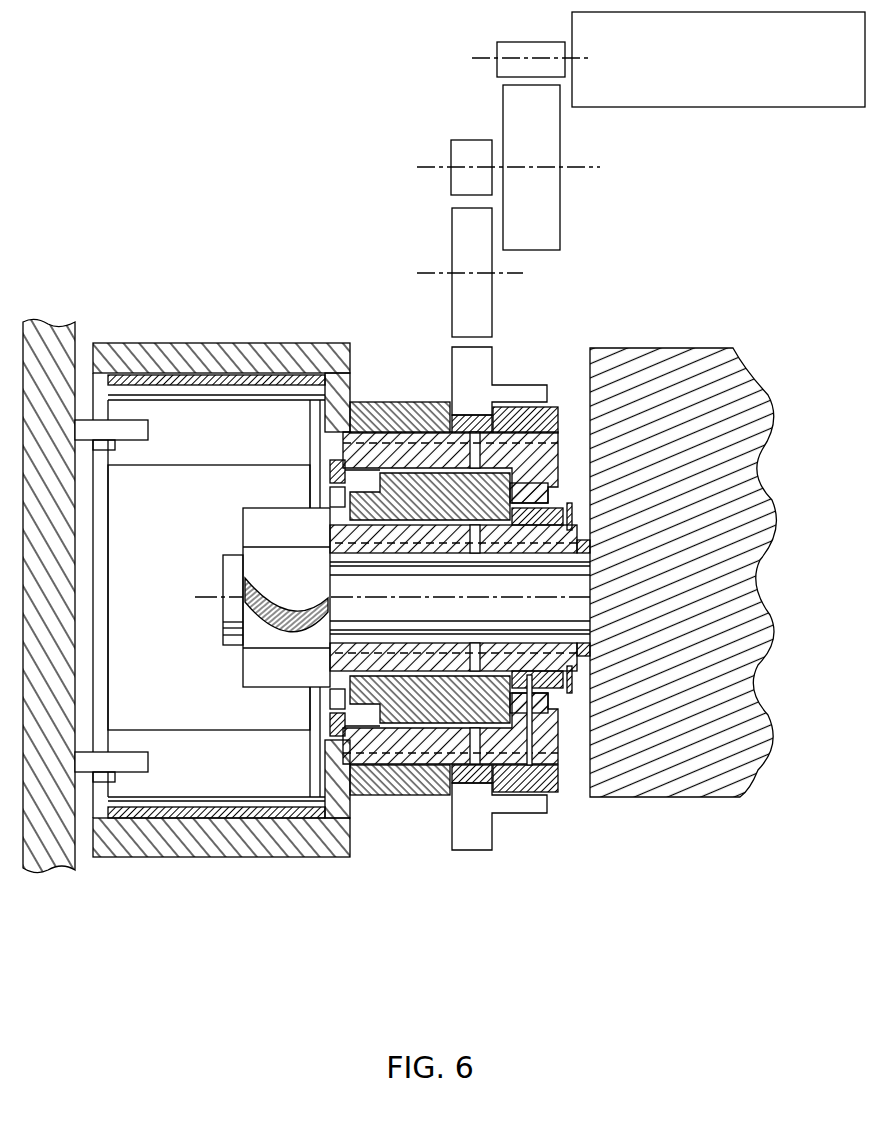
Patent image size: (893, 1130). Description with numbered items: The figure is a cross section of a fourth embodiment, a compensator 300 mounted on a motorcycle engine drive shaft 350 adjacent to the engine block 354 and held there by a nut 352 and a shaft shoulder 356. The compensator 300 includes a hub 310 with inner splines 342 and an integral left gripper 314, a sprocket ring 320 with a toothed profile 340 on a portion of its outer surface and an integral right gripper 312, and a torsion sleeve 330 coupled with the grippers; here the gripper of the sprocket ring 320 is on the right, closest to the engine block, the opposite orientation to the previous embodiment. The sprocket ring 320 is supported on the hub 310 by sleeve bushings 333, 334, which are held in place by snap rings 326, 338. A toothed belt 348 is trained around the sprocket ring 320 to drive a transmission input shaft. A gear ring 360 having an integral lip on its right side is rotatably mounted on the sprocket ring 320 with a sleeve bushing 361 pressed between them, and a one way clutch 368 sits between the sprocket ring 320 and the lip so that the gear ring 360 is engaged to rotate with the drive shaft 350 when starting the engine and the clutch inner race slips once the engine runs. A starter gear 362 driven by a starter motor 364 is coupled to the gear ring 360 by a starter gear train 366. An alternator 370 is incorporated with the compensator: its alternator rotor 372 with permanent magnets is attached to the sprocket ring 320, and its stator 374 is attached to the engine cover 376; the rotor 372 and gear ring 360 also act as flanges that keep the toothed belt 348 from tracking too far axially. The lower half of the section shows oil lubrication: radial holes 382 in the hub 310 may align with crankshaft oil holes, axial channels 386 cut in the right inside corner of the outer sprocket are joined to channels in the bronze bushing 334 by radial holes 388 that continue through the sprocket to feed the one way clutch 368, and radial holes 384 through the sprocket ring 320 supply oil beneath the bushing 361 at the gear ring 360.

The compensator 300 is at (387, 874).
The hub 310 is at (350, 532).
The right gripper 312 is at (520, 452).
The left gripper 314 is at (336, 512).
The sprocket ring 320 is at (381, 402).
The snap ring 326 is at (583, 551).
The torsion sleeve 330 is at (495, 505).
The sleeve bushing 333 is at (330, 487).
The sleeve bushing 334 is at (562, 516).
The snap ring 338 is at (330, 472).
The toothed profile 340 is at (428, 402).
The inner splines 342 is at (354, 556).
The toothed belt 348 is at (418, 797).
The drive shaft 350 is at (230, 568).
The nut 352 is at (247, 668).
The engine block 354 is at (735, 376).
The shaft shoulder 356 is at (590, 652).
The gear ring 360 is at (496, 347).
The sleeve bushing 361 is at (468, 414).
The starter gear 362 is at (500, 48).
The starter motor 364 is at (760, 108).
The starter gear train 366 is at (385, 338).
The one way clutch 368 is at (552, 407).
The alternator 370 is at (192, 914).
The alternator rotor 372 is at (205, 857).
The stator 374 is at (160, 731).
The engine cover 376 is at (63, 334).
The radial holes 382 is at (483, 472).
The radial holes 384 is at (472, 456).
The axial channels 386 is at (548, 728).
The radial holes 388 is at (520, 753).